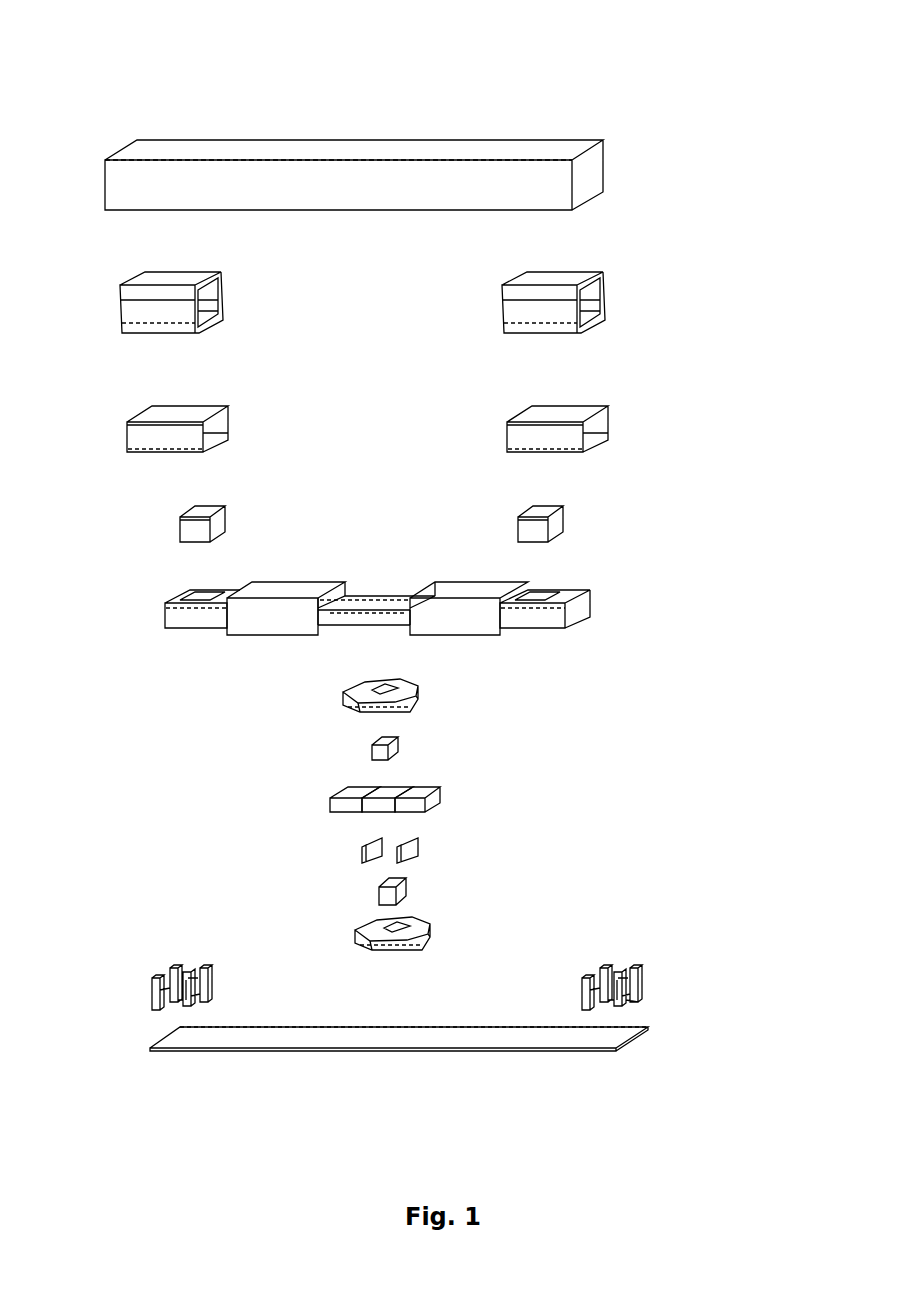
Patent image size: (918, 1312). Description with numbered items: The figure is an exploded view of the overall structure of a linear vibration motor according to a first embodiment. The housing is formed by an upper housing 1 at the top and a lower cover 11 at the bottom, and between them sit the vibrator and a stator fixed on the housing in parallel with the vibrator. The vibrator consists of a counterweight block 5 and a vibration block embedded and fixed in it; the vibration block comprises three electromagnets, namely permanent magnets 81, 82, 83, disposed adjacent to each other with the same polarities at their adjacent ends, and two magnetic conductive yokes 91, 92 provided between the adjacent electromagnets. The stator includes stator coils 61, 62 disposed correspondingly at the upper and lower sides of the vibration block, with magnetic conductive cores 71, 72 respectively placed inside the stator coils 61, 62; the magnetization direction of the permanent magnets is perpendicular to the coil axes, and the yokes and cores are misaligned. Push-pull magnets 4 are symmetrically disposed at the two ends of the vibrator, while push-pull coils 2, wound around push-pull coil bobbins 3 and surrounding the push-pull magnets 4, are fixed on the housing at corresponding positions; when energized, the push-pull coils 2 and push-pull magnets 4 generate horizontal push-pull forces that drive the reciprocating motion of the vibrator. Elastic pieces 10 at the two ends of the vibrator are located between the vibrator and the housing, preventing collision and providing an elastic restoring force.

The upper housing 1 is at (538, 172).
The push-pull coil 2 is at (575, 290).
The push-pull coil bobbin 3 is at (585, 418).
The push-pull magnet 4 is at (562, 520).
The counterweight block 5 is at (583, 597).
The stator coil 61 is at (420, 690).
The stator coil 62 is at (362, 930).
The magnetic conductive core 71 is at (400, 748).
The magnetic conductive core 72 is at (400, 895).
The permanent magnet 81 is at (332, 792).
The permanent magnet 82 is at (385, 792).
The permanent magnet 83 is at (440, 790).
The magnetic conductive yoke 91 is at (360, 847).
The magnetic conductive yoke 92 is at (420, 852).
The elastic piece 10 is at (642, 993).
The lower cover 11 is at (355, 1042).